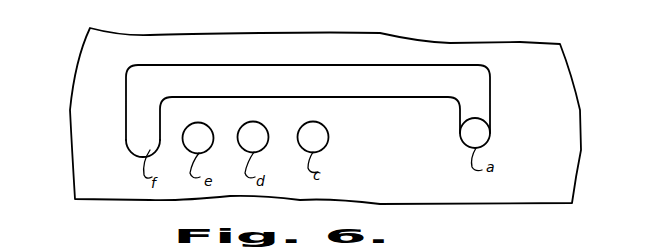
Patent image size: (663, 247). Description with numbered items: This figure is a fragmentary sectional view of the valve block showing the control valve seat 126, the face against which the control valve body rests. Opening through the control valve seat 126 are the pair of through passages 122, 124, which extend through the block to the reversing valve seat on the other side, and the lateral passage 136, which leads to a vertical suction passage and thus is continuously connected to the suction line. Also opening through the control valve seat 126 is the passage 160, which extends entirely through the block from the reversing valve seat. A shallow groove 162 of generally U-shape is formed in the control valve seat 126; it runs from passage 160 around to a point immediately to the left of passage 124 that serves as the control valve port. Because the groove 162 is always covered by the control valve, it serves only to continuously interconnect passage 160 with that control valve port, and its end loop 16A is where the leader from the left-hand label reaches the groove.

The control valve seat 126 is at (565, 150).
The shallow groove 162 is at (438, 70).
The end loop of conductor 16A is at (135, 141).
The passage 160 is at (490, 135).
The through passage 124 is at (199, 122).
The lateral passage 136 is at (256, 122).
The through passage 122 is at (312, 122).